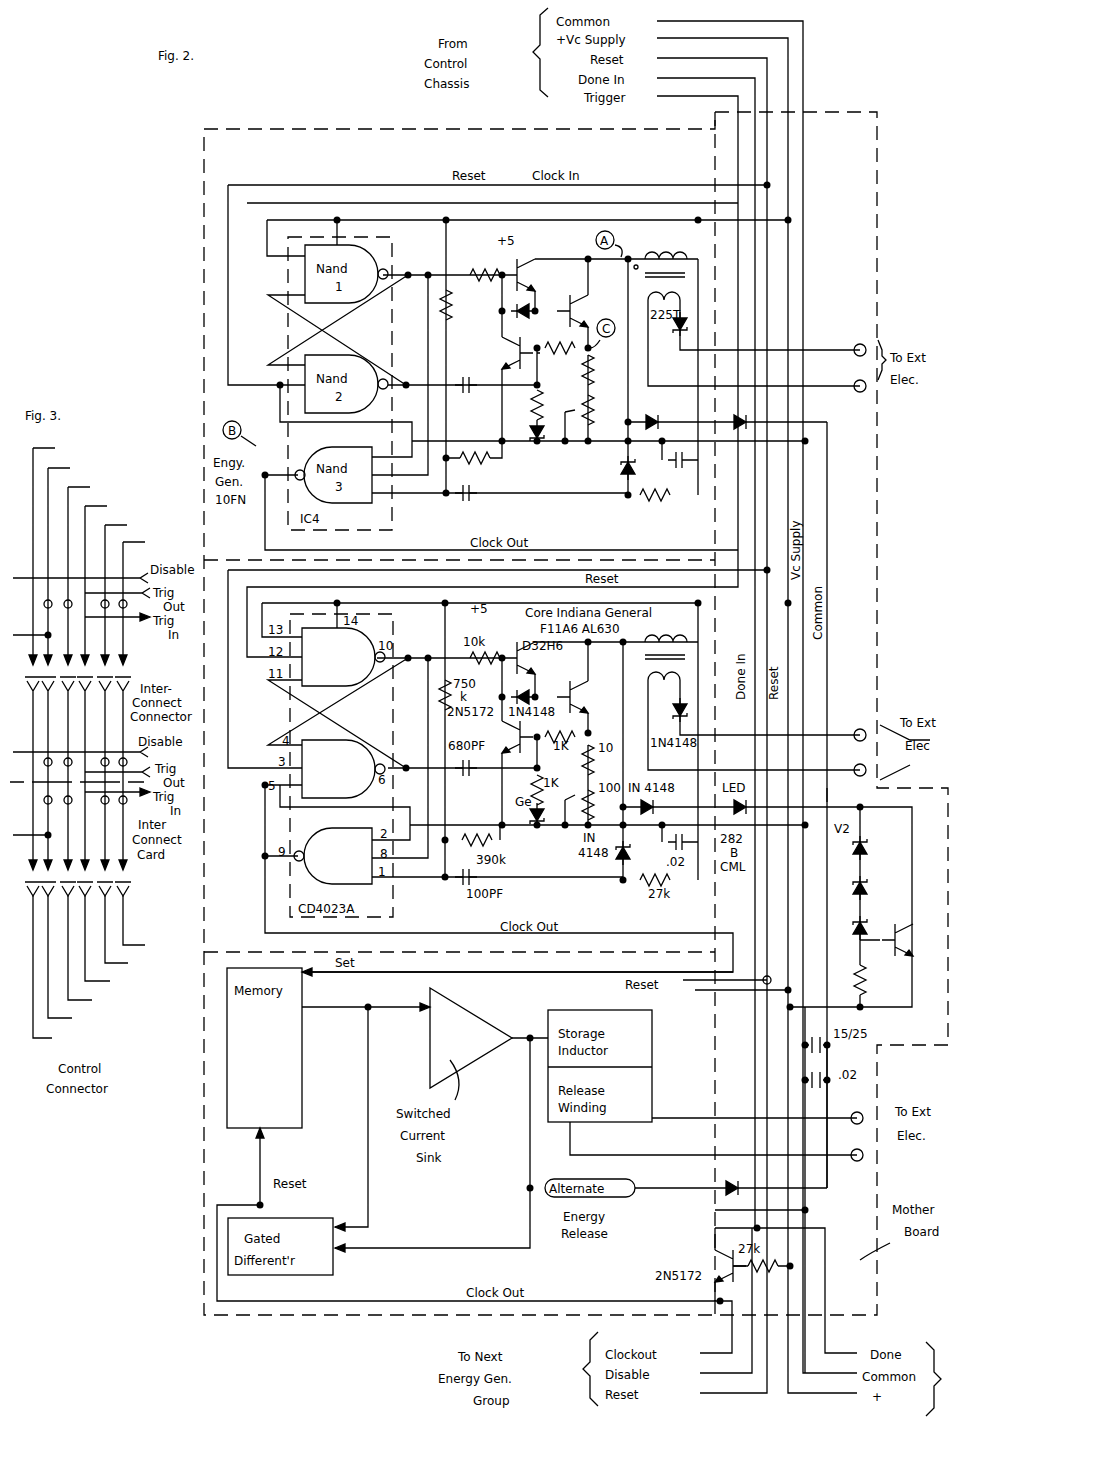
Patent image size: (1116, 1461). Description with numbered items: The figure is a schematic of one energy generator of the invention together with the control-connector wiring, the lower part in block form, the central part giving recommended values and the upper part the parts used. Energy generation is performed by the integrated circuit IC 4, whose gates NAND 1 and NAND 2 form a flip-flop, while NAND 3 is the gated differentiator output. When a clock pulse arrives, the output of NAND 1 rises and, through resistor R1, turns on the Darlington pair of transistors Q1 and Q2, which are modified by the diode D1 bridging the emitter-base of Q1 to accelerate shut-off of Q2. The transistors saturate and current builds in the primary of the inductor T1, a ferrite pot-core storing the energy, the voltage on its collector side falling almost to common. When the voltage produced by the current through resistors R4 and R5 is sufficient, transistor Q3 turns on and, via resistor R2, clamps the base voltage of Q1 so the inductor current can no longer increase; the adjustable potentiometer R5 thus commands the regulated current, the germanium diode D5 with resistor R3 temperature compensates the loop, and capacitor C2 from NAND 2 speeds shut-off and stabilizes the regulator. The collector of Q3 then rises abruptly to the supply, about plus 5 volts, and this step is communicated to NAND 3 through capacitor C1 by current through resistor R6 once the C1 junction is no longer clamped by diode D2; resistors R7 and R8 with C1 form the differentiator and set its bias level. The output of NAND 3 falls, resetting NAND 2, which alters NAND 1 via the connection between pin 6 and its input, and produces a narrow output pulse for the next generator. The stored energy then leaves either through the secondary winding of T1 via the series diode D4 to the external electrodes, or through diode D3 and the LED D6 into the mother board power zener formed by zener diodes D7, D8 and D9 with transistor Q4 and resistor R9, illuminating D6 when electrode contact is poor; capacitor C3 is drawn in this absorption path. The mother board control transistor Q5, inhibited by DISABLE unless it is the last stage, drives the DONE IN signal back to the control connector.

In FIG. 2, the resistor R1 is at (483, 263).
In FIG. 2, the resistor R2 is at (560, 362).
In FIG. 2, the resistor R3 is at (549, 405).
In FIG. 2, the resistor R4 is at (602, 370).
In FIG. 2, the adjustable potentiometer R5 is at (602, 410).
In FIG. 2, the resistor R6 is at (657, 507).
In FIG. 2, the resistor R7 is at (475, 472).
In FIG. 2, the resistor R8 is at (458, 309).
In FIG. 2, the resistor R9 is at (874, 980).
In FIG. 2, the capacitor C1 is at (466, 506).
In FIG. 2, the capacitor C2 is at (466, 399).
In FIG. 2, the capacitor C3 is at (678, 473).
In FIG. 2, the diode D1 is at (526, 320).
In FIG. 2, the diode D2 is at (607, 468).
In FIG. 2, the diode D3 is at (652, 412).
In FIG. 2, the series diode D4 is at (663, 330).
In FIG. 2, the germanium diode D5 is at (518, 423).
In FIG. 2, the LED D6 is at (737, 412).
In FIG. 2, the zener diode D7 is at (873, 841).
In FIG. 2, the zener diode D8 is at (874, 881).
In FIG. 2, the zener diode D9 is at (874, 920).
In FIG. 2, the transistor Q1 is at (537, 275).
In FIG. 2, the transistor Q2 is at (585, 311).
In FIG. 2, the transistor Q3 is at (489, 353).
In FIG. 2, the transistor Q4 is at (913, 940).
In FIG. 2, the control transistor Q5 is at (695, 1266).
In FIG. 2, the inductor T1 is at (657, 265).
In FIG. 3, the NAND gate 1 is at (60, 971).
In FIG. 3, the NAND gate 2 is at (85, 961).
In FIG. 3, the NAND gate 3 is at (106, 952).
In FIG. 3, the IC 4 is at (127, 943).
In FIG. 3, the supply voltage 5 is at (140, 934).
In FIG. 3, the pin 6 is at (145, 925).